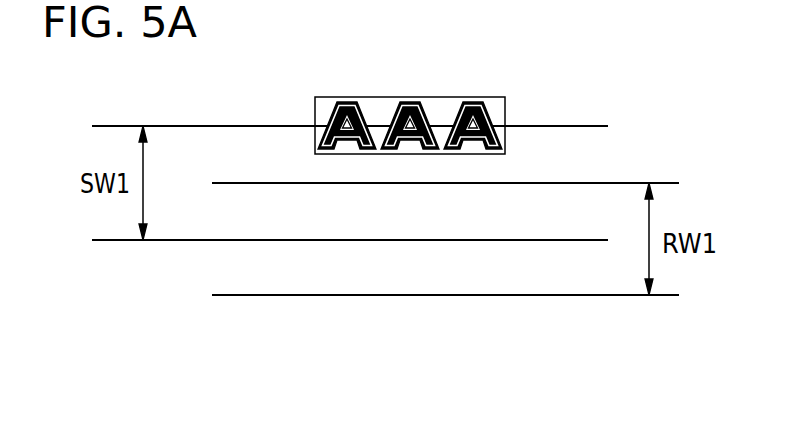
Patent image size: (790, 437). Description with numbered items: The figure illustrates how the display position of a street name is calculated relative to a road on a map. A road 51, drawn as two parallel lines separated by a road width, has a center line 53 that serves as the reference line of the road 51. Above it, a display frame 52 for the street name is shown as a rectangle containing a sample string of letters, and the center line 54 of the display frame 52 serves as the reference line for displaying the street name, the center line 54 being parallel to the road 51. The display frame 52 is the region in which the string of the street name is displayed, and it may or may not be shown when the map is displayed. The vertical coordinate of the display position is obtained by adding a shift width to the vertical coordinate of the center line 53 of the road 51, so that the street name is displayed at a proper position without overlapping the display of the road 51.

The road 51 is at (513, 282).
The display frame 52 is at (492, 102).
The center line 53 is at (320, 240).
The center line 54 is at (232, 126).